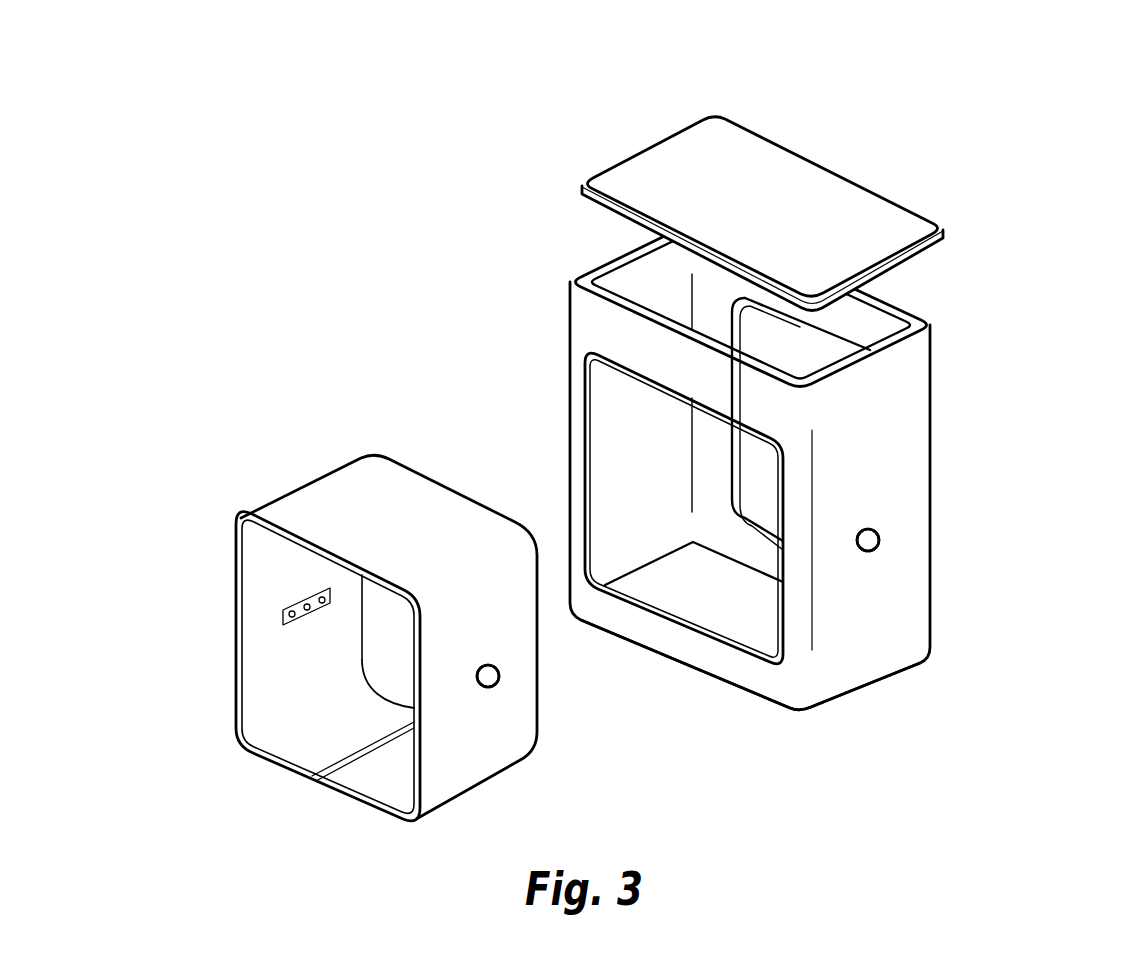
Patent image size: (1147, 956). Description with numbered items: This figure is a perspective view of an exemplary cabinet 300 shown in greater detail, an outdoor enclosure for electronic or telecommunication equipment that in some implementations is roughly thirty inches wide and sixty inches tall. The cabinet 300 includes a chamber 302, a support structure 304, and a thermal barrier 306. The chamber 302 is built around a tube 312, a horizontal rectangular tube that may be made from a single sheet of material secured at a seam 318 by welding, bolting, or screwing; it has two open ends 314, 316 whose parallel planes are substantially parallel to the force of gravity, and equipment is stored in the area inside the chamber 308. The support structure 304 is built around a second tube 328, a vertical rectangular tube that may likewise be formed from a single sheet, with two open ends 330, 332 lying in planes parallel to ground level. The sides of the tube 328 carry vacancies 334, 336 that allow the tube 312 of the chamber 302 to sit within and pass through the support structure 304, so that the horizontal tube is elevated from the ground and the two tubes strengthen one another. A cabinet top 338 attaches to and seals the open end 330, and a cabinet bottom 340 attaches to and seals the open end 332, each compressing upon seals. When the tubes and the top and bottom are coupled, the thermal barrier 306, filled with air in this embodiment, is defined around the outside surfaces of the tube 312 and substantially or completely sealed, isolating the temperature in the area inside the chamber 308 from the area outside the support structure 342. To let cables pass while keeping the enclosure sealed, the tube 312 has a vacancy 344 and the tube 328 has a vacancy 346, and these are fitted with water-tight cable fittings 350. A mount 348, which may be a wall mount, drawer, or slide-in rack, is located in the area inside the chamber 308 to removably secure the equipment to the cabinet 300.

The cabinet 300 is at (600, 427).
The chamber 302 is at (358, 586).
The support structure 304 is at (779, 394).
The thermal barrier 306 is at (576, 336).
The area inside the chamber 308 is at (279, 698).
The tube 312 is at (389, 629).
The open end 314 is at (282, 666).
The open end 316 is at (245, 622).
The seam 318 is at (294, 766).
The tube 328 is at (702, 496).
The open end 330 is at (823, 304).
The open end 332 is at (809, 687).
The vacancy 334 is at (633, 508).
The vacancy 336 is at (762, 514).
The cabinet top 338 is at (789, 214).
The cabinet bottom 340 is at (684, 618).
The area outside the support structure 342 is at (757, 457).
The vacancy 344 is at (552, 719).
The vacancy 346 is at (949, 571).
The mount 348 is at (243, 568).
The water-tight cable fittings 350 is at (784, 639).